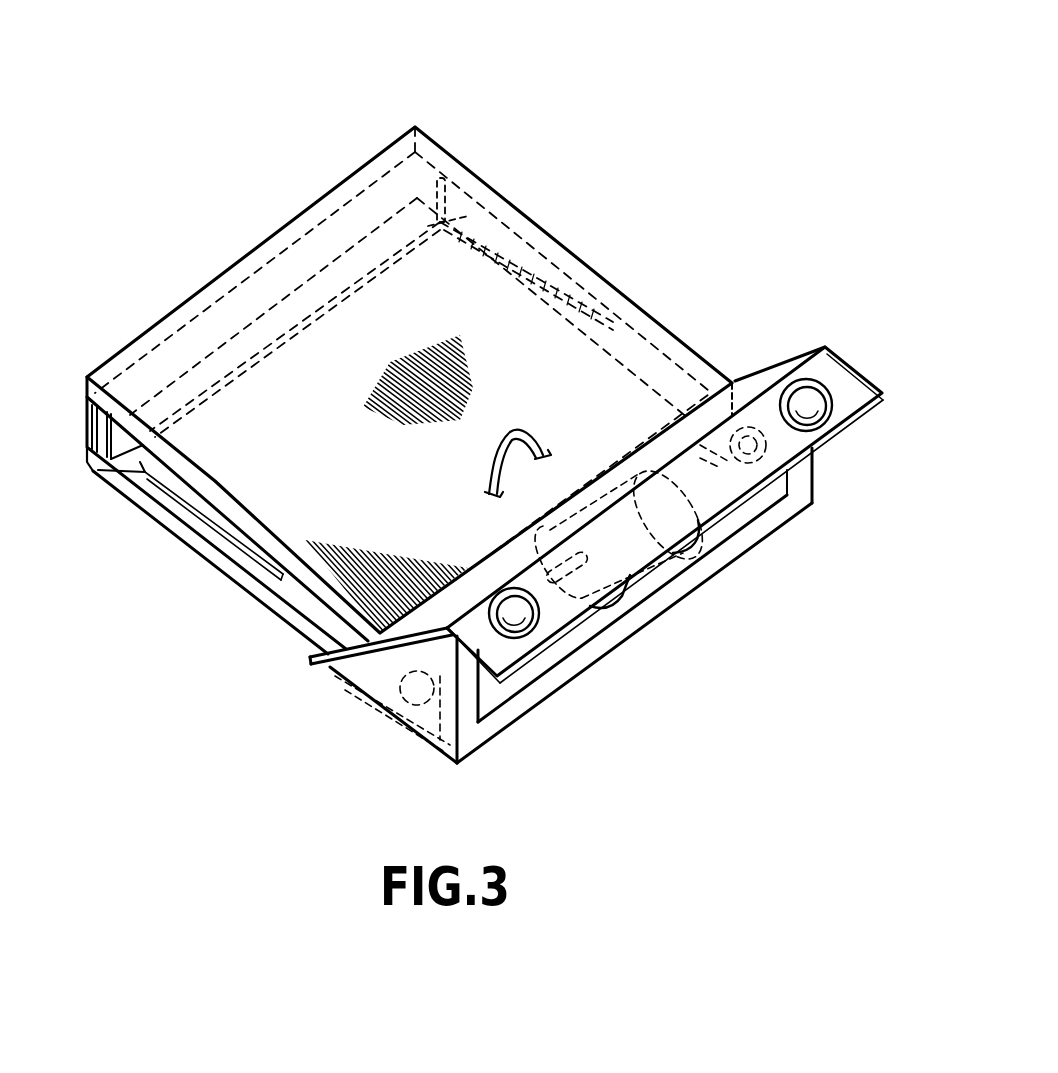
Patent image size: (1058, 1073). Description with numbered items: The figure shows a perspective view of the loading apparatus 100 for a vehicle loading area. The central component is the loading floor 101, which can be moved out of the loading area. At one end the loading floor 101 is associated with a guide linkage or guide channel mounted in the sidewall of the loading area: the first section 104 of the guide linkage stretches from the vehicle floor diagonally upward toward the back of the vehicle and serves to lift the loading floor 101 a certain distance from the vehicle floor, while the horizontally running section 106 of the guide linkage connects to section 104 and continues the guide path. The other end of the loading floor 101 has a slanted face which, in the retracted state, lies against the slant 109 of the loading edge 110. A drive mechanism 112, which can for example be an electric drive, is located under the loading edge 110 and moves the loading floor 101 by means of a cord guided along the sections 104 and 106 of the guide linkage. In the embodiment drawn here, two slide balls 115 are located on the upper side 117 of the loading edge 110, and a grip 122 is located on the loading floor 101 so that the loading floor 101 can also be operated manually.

The loading apparatus 100 is at (171, 191).
The loading floor 101 is at (302, 431).
The first section of guide linkage or guide channel 104 is at (466, 198).
The horizontally running section of guide linkage or channel 106 is at (566, 249).
The slant 109 is at (372, 677).
The loading edge 110 is at (383, 680).
The drive mechanism 112 is at (665, 553).
The slide balls 115 is at (826, 388).
The upper side 117 is at (825, 368).
The grip 122 is at (521, 428).